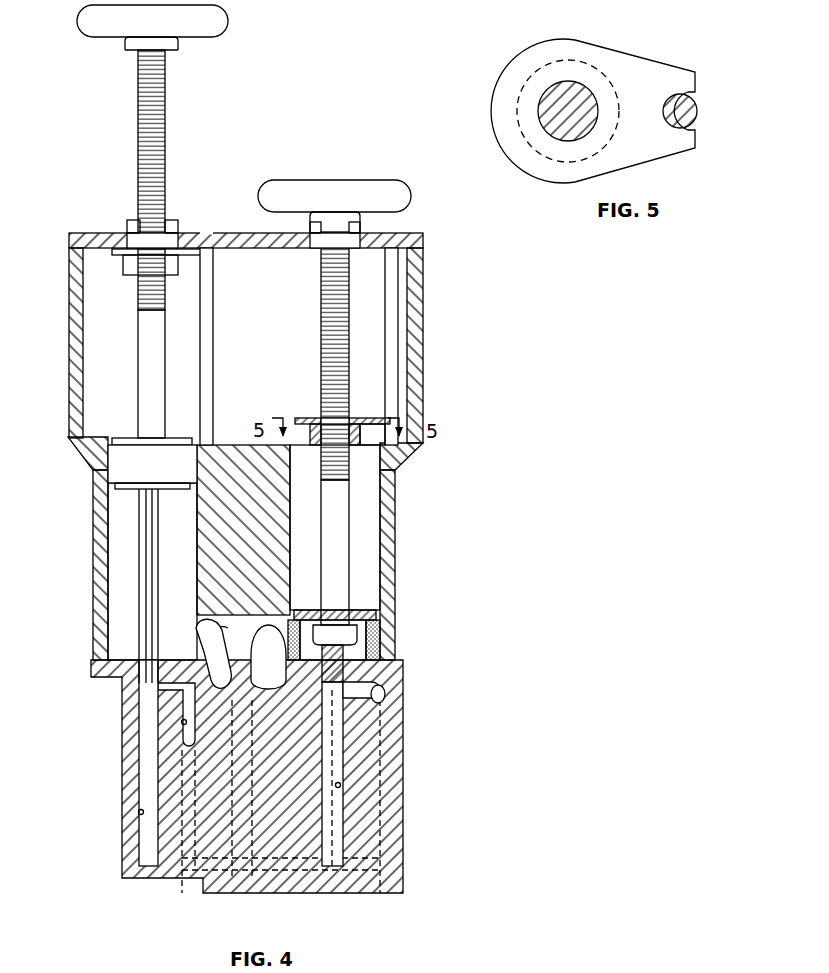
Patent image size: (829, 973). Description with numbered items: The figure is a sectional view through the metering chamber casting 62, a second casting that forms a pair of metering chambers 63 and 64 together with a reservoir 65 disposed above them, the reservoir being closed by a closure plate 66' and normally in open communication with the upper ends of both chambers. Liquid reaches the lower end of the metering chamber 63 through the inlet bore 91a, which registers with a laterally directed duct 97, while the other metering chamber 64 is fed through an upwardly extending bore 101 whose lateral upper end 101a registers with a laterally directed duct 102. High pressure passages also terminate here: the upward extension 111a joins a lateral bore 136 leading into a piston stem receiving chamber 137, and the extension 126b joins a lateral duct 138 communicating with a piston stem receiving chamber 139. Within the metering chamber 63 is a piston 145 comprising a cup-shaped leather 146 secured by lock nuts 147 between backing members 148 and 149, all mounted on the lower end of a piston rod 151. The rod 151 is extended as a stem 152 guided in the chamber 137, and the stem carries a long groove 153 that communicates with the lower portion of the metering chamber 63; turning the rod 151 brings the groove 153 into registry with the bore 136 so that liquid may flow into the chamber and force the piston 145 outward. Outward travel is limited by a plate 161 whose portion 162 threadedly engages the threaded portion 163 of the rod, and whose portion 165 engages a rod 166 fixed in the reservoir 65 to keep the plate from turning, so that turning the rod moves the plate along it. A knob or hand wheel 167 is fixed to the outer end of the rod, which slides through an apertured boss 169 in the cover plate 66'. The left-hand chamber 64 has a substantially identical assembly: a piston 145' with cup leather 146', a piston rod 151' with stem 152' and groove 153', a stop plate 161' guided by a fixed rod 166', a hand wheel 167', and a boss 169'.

In FIG. 4, the metering chamber casting 62 is at (399, 504).
In FIG. 4, the metering chamber 63 is at (379, 540).
In FIG. 4, the metering chamber 64 is at (116, 557).
In FIG. 4, the reservoir 65 is at (233, 244).
In FIG. 4, the closure plate 66' is at (225, 311).
In FIG. 4, the inlet bore 91a is at (270, 657).
In FIG. 4, the laterally directed duct 97 is at (244, 641).
In FIG. 4, the upwardly extending bore 101 is at (233, 848).
In FIG. 4, the laterally directed upper end of bore 101a is at (217, 666).
In FIG. 4, the laterally directed duct 102 is at (205, 627).
In FIG. 4, the upward extension of high pressure duct 111a is at (385, 702).
In FIG. 4, the upward extension of high pressure duct 126b is at (182, 722).
In FIG. 4, the lateral bore 136 is at (377, 686).
In FIG. 4, the piston stem receiving chamber 137 is at (341, 785).
In FIG. 4, the lateral duct 138 is at (142, 693).
In FIG. 4, the piston stem receiving chamber 139 is at (138, 812).
In FIG. 4, the piston 145 is at (367, 527).
In FIG. 4, the piston 145' is at (120, 464).
In FIG. 4, the cup-shaped leather 146 is at (328, 613).
In FIG. 4, the cup-shaped leather 146' is at (160, 505).
In FIG. 4, the lock nuts 147 is at (378, 642).
In FIG. 4, the backing member 148 is at (376, 617).
In FIG. 4, the backing member 149 is at (378, 637).
In FIG. 4, the piston rod 151 is at (378, 428).
In FIG. 5, the piston rod 151 is at (568, 75).
In FIG. 4, the piston rod 151' is at (111, 244).
In FIG. 4, the stem 152 is at (382, 684).
In FIG. 4, the stem 152' is at (102, 586).
In FIG. 4, the groove 153 is at (394, 739).
In FIG. 4, the groove 153' is at (174, 586).
In FIG. 4, the plate 161 is at (336, 412).
In FIG. 5, the plate 161 is at (593, 103).
In FIG. 4, the plate 161' is at (145, 277).
In FIG. 4, the threaded portion of plate 162 is at (353, 446).
In FIG. 5, the threaded portion of plate 162 is at (520, 129).
In FIG. 4, the threaded portion of rod 163 is at (320, 466).
In FIG. 5, the portion of plate 165 is at (688, 95).
In FIG. 4, the rod 166 is at (374, 346).
In FIG. 5, the rod 166 is at (702, 114).
In FIG. 4, the rod 166' is at (237, 355).
In FIG. 4, the knob or hand wheel 167 is at (334, 187).
In FIG. 4, the knob or hand wheel 167' is at (120, 29).
In FIG. 4, the apertured boss 169 is at (359, 230).
In FIG. 4, the apertured boss 169' is at (128, 222).